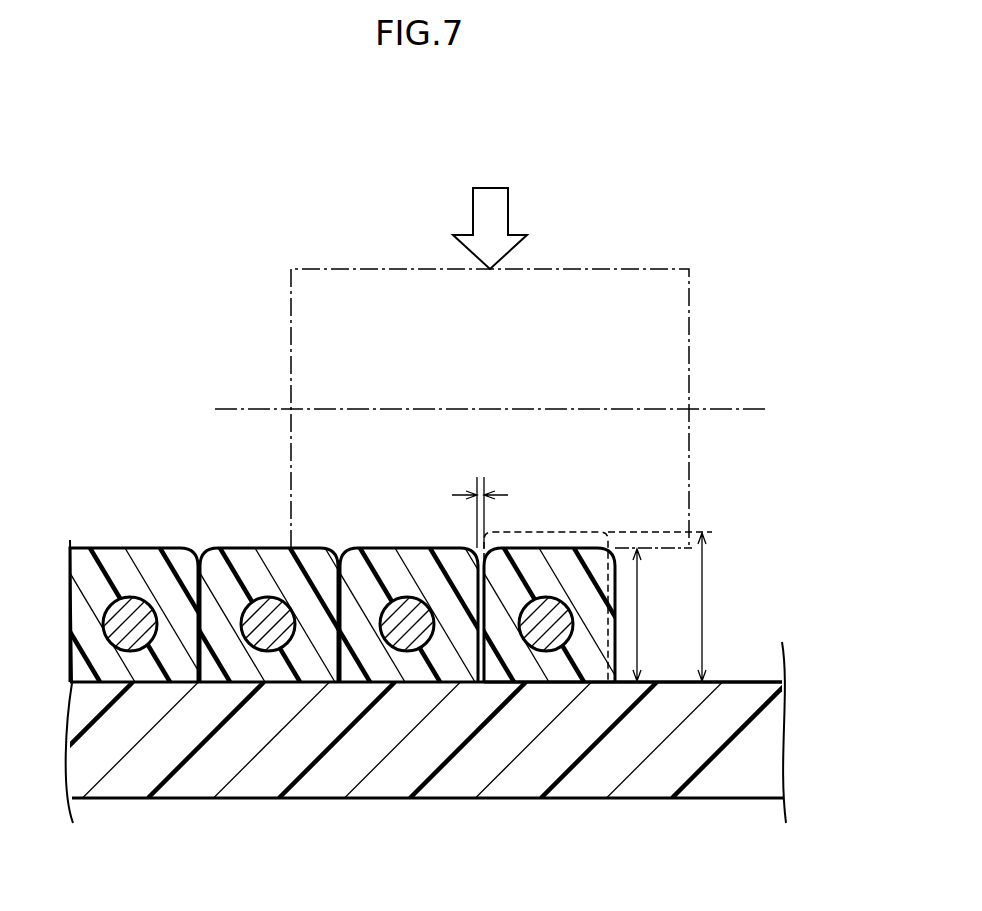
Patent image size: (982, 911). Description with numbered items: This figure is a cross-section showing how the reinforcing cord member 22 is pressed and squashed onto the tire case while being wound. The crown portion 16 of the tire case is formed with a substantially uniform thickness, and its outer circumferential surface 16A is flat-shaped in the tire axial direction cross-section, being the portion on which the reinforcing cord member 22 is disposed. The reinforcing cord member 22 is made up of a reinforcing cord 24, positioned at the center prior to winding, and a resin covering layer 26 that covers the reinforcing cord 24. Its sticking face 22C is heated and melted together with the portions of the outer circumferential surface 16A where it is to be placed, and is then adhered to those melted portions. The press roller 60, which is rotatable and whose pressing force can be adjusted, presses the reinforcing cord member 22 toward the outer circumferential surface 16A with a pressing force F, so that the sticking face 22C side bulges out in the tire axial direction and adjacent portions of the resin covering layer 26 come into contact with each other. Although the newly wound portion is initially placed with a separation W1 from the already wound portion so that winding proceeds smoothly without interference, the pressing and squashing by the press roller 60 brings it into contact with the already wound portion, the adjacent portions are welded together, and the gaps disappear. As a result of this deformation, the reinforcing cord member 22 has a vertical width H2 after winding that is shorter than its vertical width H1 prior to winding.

The crown portion 16 is at (650, 804).
The outer circumferential surface 16A is at (760, 682).
The reinforcing cord member 22 is at (354, 655).
The sticking face 22C is at (543, 682).
The reinforcing cord 24 is at (245, 615).
The resin covering layer 26 is at (285, 562).
The press roller 60 is at (689, 287).
The pressing force F is at (508, 207).
The separation W1 is at (478, 486).
The vertical width prior to winding H1 is at (706, 613).
The vertical width after winding H2 is at (640, 613).